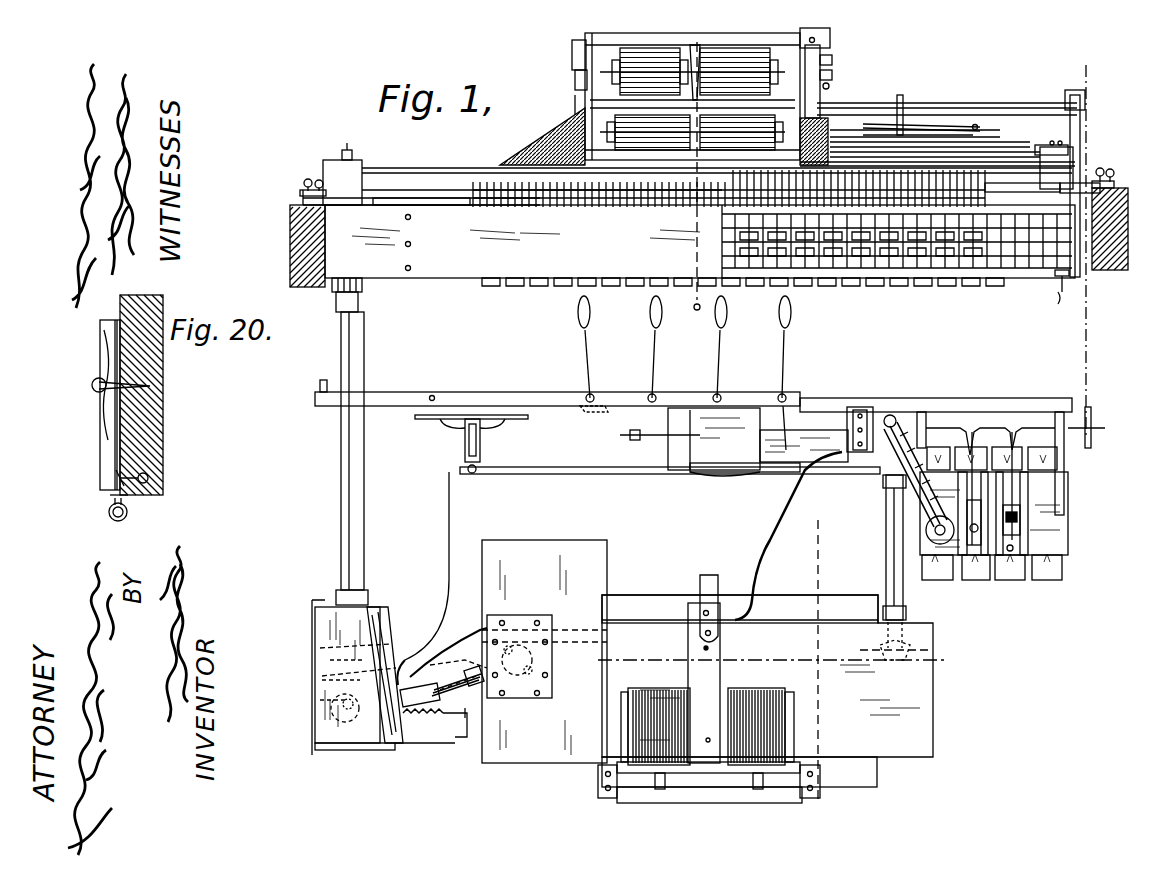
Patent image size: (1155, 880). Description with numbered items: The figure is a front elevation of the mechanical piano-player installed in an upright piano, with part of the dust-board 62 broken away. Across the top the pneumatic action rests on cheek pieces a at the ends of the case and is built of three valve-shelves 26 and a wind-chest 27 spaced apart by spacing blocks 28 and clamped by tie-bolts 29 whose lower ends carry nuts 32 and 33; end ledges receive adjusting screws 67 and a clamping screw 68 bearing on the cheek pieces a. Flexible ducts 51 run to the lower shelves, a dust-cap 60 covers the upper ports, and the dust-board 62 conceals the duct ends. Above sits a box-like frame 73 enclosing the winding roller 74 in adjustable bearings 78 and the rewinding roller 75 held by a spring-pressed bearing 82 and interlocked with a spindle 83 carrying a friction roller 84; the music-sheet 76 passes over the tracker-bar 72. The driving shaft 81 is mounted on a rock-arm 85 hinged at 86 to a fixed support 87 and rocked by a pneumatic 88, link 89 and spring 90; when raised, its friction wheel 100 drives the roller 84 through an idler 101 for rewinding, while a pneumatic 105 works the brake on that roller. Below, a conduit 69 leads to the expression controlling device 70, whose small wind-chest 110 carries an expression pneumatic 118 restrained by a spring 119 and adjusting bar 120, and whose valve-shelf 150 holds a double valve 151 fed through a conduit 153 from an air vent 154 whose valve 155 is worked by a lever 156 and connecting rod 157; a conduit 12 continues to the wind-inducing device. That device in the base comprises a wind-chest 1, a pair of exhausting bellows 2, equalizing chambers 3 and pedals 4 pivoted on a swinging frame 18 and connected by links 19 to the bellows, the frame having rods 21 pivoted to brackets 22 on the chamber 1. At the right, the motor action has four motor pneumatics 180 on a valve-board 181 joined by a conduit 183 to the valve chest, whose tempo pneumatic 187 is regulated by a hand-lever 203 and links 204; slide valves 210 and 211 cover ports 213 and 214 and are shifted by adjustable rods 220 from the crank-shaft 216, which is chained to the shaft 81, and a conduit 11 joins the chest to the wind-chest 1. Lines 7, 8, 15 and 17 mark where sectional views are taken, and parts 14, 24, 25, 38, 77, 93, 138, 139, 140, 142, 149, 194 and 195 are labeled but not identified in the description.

In FIG. 1, the wind-chest 1 is at (930, 700).
In FIG. 1, the exhausting bellows 2 is at (833, 622).
In FIG. 1, the equalizing chambers 3 is at (560, 572).
In FIG. 1, the pedals 4 is at (660, 700).
In FIG. 1, the section line 7 is at (818, 676).
In FIG. 1, the section line 8 is at (485, 660).
In FIG. 1, the conduit 11 is at (905, 602).
In FIG. 1, the conduit 12 is at (478, 690).
In FIG. 1, the foot 14 is at (660, 790).
In FIG. 1, the section line 15 is at (1068, 524).
In FIG. 1, the section line 17 is at (972, 440).
In FIG. 1, the frame 18 is at (892, 420).
In FIG. 1, the link 19 is at (916, 430).
In FIG. 1, the rods 21 is at (608, 766).
In FIG. 1, the brackets 22 is at (624, 722).
In FIG. 1, the slotted rod 24 is at (705, 575).
In FIG. 1, the standard 25 is at (712, 640).
In FIG. 1, the valve-shelves 26 is at (1015, 238).
In FIG. 1, the wind-chest 27 is at (450, 172).
In FIG. 1, the spacing blocks 28 is at (362, 192).
In FIG. 1, the tie-bolts 29 is at (1100, 126).
In FIG. 1, the nut 32 is at (362, 288).
In FIG. 1, the nut 33 is at (1068, 276).
In FIG. 1, the tabs 38 is at (536, 286).
In FIG. 1, the flexible ducts 51 is at (480, 205).
In FIG. 1, the dust-cap 60 is at (462, 196).
In FIG. 1, the dust-board 62 is at (462, 258).
In FIG. 1, the adjusting screws 67 is at (308, 178).
In FIG. 1, the clamping screw 68 is at (314, 184).
In FIG. 1, the conduit 69 is at (364, 470).
In FIG. 1, the expression controlling device 70 is at (375, 650).
In FIG. 1, the tracker-bar 72 is at (612, 70).
In FIG. 1, the supporting frame 73 is at (580, 50).
In FIG. 1, the winding roller 74 is at (570, 128).
In FIG. 1, the rewinding roller 75 is at (585, 76).
In FIG. 1, the music-sheet 76 is at (735, 58).
In FIG. 1, the lower spool 77 is at (695, 132).
In FIG. 1, the adjustable bearings 78 is at (535, 148).
In FIG. 1, the driving shaft 81 is at (1004, 104).
In FIG. 1, the spring-pressed bearing 82 is at (590, 80).
In FIG. 1, the rotary spindle 83 is at (833, 74).
In FIG. 1, the friction roller 84 is at (832, 58).
In FIG. 1, the rock-arm 85 is at (1038, 118).
In FIG. 1, the hinge 86 is at (1085, 100).
In FIG. 1, the fixed support 87 is at (1075, 136).
In FIG. 1, the pneumatic 88 is at (1030, 148).
In FIG. 1, the link 89 is at (935, 125).
In FIG. 1, the spring 90 is at (925, 130).
In FIG. 1, the screw 93 is at (898, 100).
In FIG. 1, the friction wheel 100 is at (820, 92).
In FIG. 1, the friction wheel idler 101 is at (830, 86).
In FIG. 1, the pneumatic 105 is at (812, 34).
In FIG. 1, the wind-chest 110 is at (322, 656).
In FIG. 1, the expression controlling pneumatic 118 is at (400, 728).
In FIG. 1, the spring 119 is at (423, 720).
In FIG. 1, the adjusting bar 120 is at (455, 720).
In FIG. 1, the block 138 is at (862, 406).
In FIG. 1, the lever 139 is at (785, 350).
In FIG. 1, the lever arm 140 is at (790, 440).
In FIG. 1, the tube 142 is at (762, 550).
In FIG. 1, the cable 149 is at (405, 650).
In FIG. 1, the valve-shelf 150 is at (422, 694).
In FIG. 1, the double valve 151 is at (408, 665).
In FIG. 1, the conduit 153 is at (447, 552).
In FIG. 1, the air vent 154 is at (455, 462).
In FIG. 20, the air vent 154 is at (150, 478).
In FIG. 1, the valve 155 is at (480, 450).
In FIG. 20, the valve 155 is at (118, 460).
In FIG. 1, the lever 156 is at (637, 349).
In FIG. 1, the connecting rod 157 is at (585, 476).
In FIG. 1, the motor pneumatics 180 is at (940, 580).
In FIG. 1, the valve-board 181 is at (1030, 500).
In FIG. 1, the conduit 183 is at (915, 470).
In FIG. 1, the tempo governing pneumatic 187 is at (790, 470).
In FIG. 1, the cable 194 is at (714, 478).
In FIG. 1, the rod 195 is at (690, 470).
In FIG. 1, the hand-lever 203 is at (720, 366).
In FIG. 1, the connecting links 204 is at (690, 440).
In FIG. 1, the slide valve 210 is at (1005, 582).
In FIG. 1, the slide valve 211 is at (1030, 582).
In FIG. 1, the upper ports 213 is at (985, 500).
In FIG. 1, the lower ports 214 is at (1020, 546).
In FIG. 1, the crank-shaft 216 is at (1092, 426).
In FIG. 1, the adjustable rods 220 is at (1025, 445).
In FIG. 1, the cheek pieces a is at (300, 246).